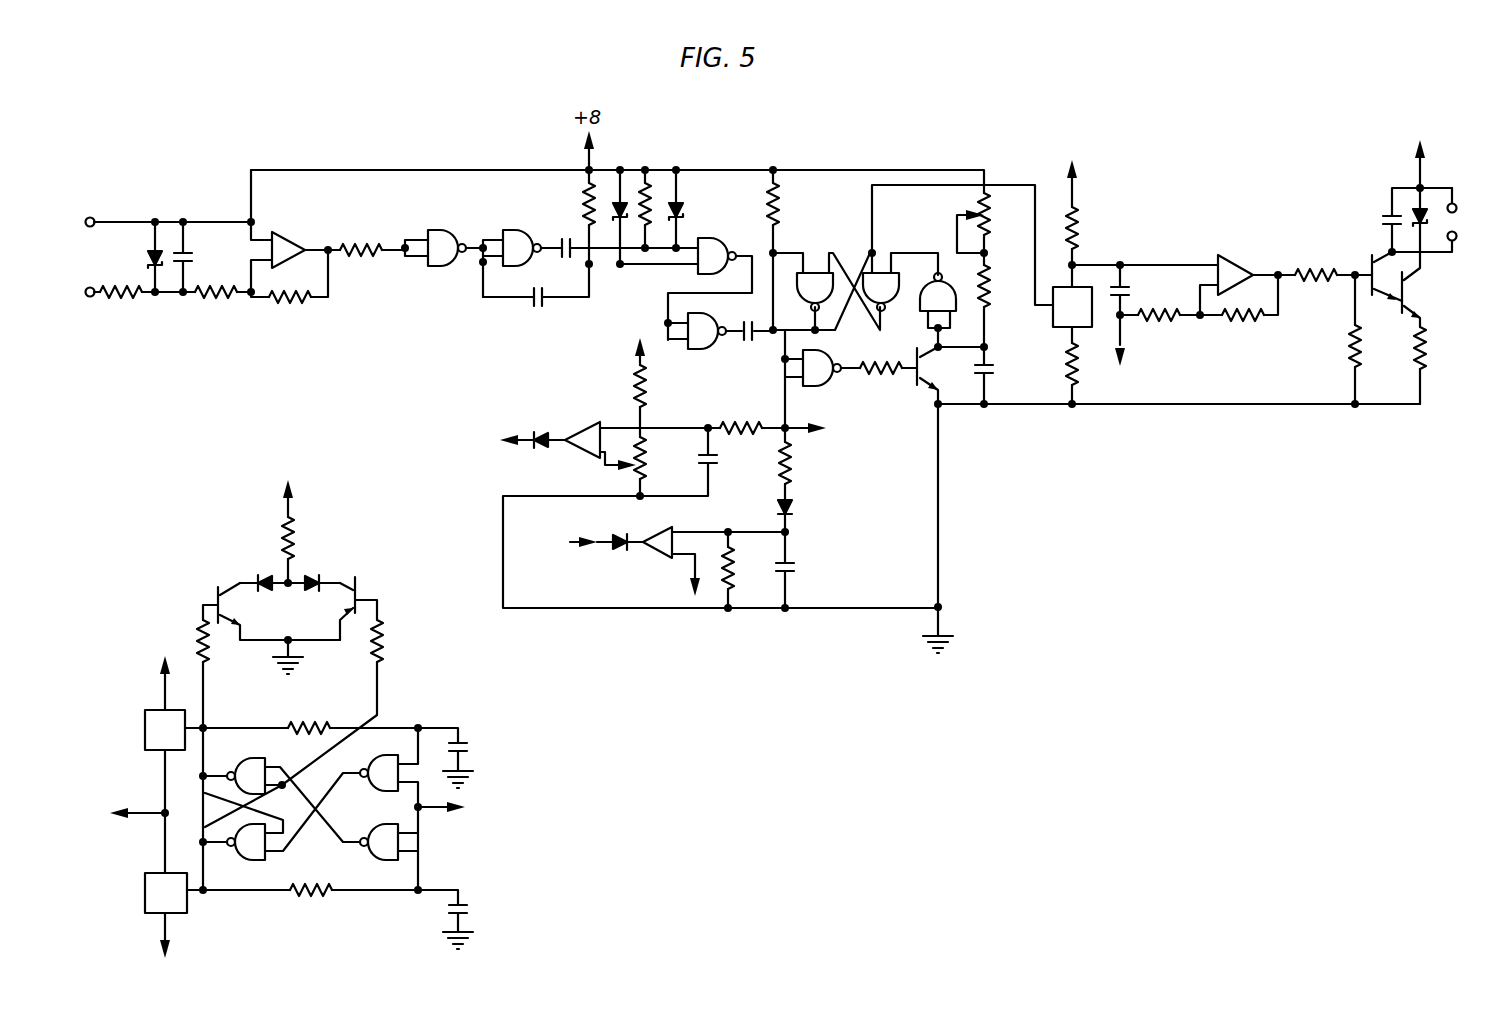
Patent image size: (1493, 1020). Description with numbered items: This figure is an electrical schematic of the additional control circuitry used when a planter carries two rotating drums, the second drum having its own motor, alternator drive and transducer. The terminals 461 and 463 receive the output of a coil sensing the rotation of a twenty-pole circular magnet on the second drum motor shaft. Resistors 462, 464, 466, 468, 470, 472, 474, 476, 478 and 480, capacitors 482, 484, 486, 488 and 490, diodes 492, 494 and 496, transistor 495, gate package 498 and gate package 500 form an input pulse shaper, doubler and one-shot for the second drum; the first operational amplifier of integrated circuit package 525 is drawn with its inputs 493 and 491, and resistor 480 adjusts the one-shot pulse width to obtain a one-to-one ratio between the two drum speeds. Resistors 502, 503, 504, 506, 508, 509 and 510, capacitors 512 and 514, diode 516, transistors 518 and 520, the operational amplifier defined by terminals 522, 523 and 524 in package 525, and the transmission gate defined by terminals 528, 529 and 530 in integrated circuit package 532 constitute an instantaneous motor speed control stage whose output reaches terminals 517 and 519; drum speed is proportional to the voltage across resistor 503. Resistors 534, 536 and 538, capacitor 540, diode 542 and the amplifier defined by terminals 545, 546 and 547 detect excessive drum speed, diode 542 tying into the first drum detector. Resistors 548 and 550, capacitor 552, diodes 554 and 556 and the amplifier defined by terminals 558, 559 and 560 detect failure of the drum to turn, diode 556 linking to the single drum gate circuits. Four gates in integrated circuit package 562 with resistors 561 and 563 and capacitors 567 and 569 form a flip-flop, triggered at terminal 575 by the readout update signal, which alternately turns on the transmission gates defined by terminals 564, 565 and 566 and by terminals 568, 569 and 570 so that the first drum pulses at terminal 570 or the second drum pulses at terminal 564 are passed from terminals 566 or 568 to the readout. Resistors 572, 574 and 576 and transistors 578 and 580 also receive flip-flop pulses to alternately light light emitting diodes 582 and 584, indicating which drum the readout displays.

The terminal 461 is at (92, 218).
The resistor 462 is at (138, 297).
The terminal 463 is at (90, 297).
The resistor 464 is at (215, 297).
The resistor 466 is at (293, 302).
The resistor 468 is at (360, 257).
The resistor 470 is at (585, 196).
The resistor 472 is at (650, 200).
The resistor 474 is at (782, 202).
The resistor 476 is at (875, 373).
The resistor 478 is at (986, 290).
The resistor 480 is at (986, 216).
The capacitor 482 is at (192, 257).
The capacitor 484 is at (563, 240).
The capacitor 486 is at (536, 306).
The capacitor 488 is at (750, 340).
The capacitor 490 is at (978, 372).
The inverting input 491 is at (272, 262).
The diode 492 is at (150, 258).
The non-inverting input 493 is at (256, 238).
The diode 494 is at (618, 205).
The transistor 495 is at (330, 247).
The diode 496 is at (686, 213).
The gate package 498 is at (430, 262).
The gate package 500 is at (808, 285).
The resistor 502 is at (1076, 375).
The resistor 503 is at (1080, 215).
The resistor 504 is at (1155, 325).
The resistor 506 is at (1240, 322).
The resistor 508 is at (1332, 262).
The resistor 509 is at (1350, 345).
The resistor 510 is at (1424, 343).
The capacitor 512 is at (1128, 294).
The capacitor 514 is at (1384, 217).
The diode 516 is at (1416, 208).
The output terminal 517 is at (1454, 202).
The transistor 518 is at (1392, 302).
The output terminal 519 is at (1453, 242).
The transistor 520 is at (1412, 300).
The operational amplifier terminal 522 is at (1213, 258).
The operational amplifier terminal 523 is at (1224, 310).
The operational amplifier terminal 524 is at (1262, 272).
The integrated circuit package 525 is at (288, 252).
The transmission gate terminal 528 is at (1072, 332).
The transmission gate terminal 529 is at (1075, 250).
The transmission gate terminal 530 is at (1053, 310).
The integrated circuit package 532 is at (1068, 330).
The resistor 534 is at (646, 385).
The resistor 536 is at (646, 458).
The resistor 538 is at (752, 415).
The capacitor 540 is at (712, 464).
The diode 542 is at (558, 428).
The operational amplifier terminal 545 is at (600, 424).
The operational amplifier terminal 546 is at (606, 466).
The operational amplifier terminal 547 is at (546, 448).
The resistor 548 is at (796, 470).
The resistor 550 is at (731, 570).
The capacitor 552 is at (796, 567).
The diode 554 is at (796, 508).
The diode 556 is at (600, 548).
The operational amplifier terminal 558 is at (626, 552).
The operational amplifier terminal 559 is at (676, 554).
The operational amplifier terminal 560 is at (673, 536).
The resistor 561 is at (320, 724).
The integrated circuit package 562 is at (256, 762).
The resistor 563 is at (318, 896).
The transmission gate terminal 564 is at (165, 915).
The transmission gate terminal 565 is at (192, 895).
The transmission gate terminal 566 is at (160, 860).
The capacitor 567 is at (468, 747).
The transmission gate terminal 568 is at (160, 770).
The capacitor 569 is at (207, 727).
The transmission gate terminal 570 is at (163, 706).
The resistor 572 is at (210, 662).
The resistor 574 is at (382, 646).
The terminal 575 is at (416, 807).
The resistor 576 is at (296, 537).
The transistor 578 is at (358, 586).
The transistor 580 is at (238, 616).
The light emitting diode 582 is at (256, 578).
The light emitting diode 584 is at (314, 578).